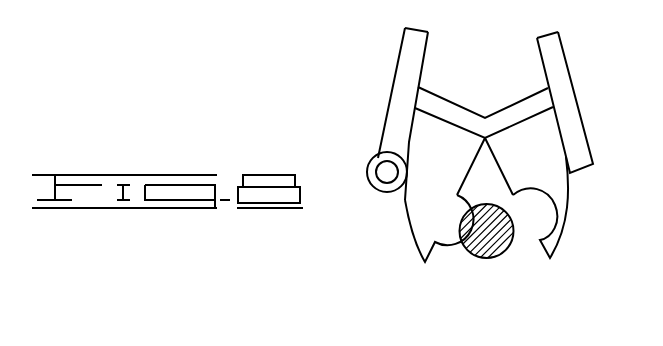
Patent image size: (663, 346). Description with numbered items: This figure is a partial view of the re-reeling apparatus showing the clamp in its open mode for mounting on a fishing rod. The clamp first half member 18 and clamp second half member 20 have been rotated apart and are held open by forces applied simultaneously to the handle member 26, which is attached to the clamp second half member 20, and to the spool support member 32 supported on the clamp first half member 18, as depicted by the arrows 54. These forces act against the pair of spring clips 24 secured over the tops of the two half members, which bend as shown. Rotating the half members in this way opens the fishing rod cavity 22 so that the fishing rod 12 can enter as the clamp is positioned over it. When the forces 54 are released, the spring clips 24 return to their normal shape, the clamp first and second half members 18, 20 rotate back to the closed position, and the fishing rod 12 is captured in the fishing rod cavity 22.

The arrows 54 is at (394, 47).
The spool support member 32 is at (387, 106).
The handle member 26 is at (574, 91).
The spring clips 24 is at (440, 97).
The clamp first half member 18 is at (412, 238).
The clamp second half member 20 is at (568, 216).
The fishing rod 12 is at (487, 250).
The fishing rod cavity 22 is at (524, 252).